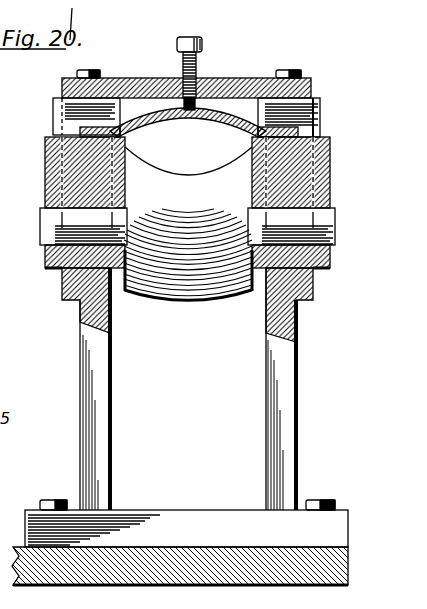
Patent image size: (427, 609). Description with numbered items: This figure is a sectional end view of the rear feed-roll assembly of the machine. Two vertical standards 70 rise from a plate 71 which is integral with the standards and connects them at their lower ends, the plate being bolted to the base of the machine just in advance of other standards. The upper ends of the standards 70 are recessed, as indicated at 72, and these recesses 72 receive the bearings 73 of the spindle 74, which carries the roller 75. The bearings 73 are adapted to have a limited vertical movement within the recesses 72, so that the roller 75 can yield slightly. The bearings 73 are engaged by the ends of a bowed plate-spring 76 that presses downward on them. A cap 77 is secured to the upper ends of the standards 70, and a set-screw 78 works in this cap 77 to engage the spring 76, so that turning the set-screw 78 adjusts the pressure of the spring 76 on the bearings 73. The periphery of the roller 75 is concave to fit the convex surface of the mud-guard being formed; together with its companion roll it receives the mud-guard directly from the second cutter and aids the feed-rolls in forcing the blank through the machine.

The vertical standards 70 is at (112, 420).
The plate 71 is at (214, 526).
The recesses 72 is at (123, 560).
The bearings 73 is at (63, 184).
The spindle 74 is at (50, 218).
The roller 75 is at (188, 223).
The bowed plate-spring 76 is at (216, 110).
The cap 77 is at (128, 80).
The set-screw 78 is at (200, 38).